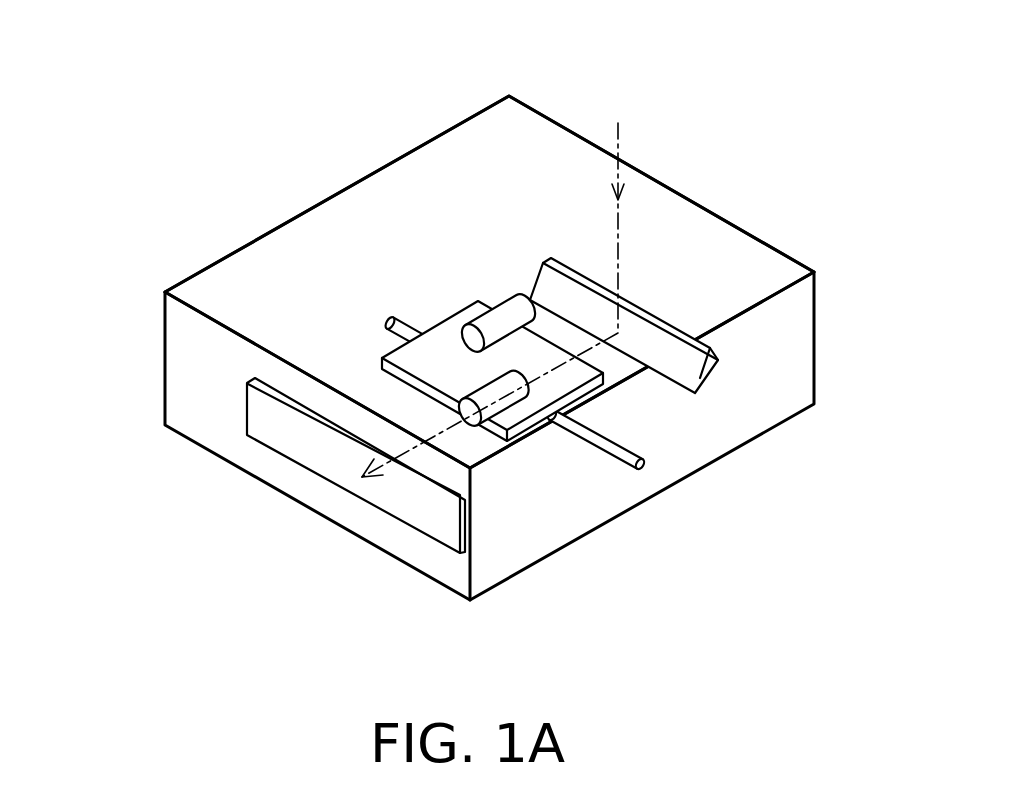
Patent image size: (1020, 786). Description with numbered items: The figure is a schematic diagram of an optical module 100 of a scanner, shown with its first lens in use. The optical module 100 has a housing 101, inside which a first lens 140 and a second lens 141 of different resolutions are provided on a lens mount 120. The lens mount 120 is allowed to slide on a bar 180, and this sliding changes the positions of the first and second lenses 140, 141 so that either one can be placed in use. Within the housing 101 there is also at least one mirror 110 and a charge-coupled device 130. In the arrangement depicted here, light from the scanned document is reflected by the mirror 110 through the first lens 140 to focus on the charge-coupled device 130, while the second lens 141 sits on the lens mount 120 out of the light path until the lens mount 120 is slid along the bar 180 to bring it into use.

The optical module 100 is at (845, 293).
The housing 101 is at (245, 243).
The mirror 110 is at (662, 330).
The lens mount 120 is at (590, 397).
The charge-coupled device (CCD) 130 is at (257, 408).
The first lens 140 is at (517, 407).
The second lens 141 is at (505, 310).
The bar 180 is at (395, 317).